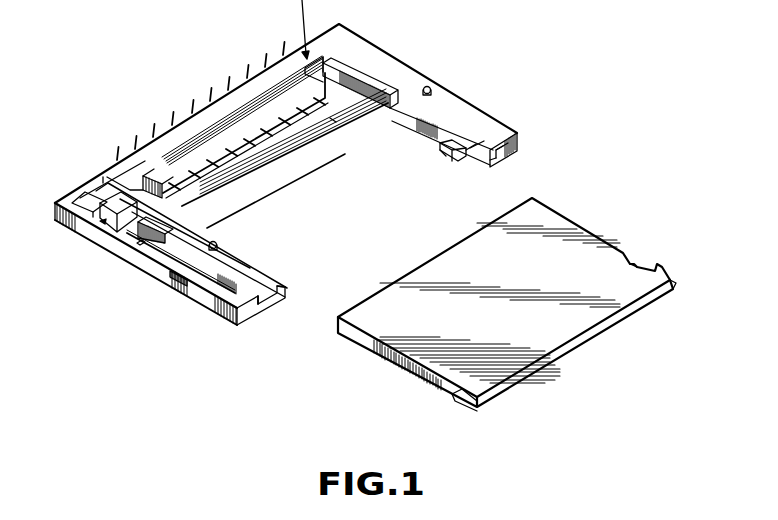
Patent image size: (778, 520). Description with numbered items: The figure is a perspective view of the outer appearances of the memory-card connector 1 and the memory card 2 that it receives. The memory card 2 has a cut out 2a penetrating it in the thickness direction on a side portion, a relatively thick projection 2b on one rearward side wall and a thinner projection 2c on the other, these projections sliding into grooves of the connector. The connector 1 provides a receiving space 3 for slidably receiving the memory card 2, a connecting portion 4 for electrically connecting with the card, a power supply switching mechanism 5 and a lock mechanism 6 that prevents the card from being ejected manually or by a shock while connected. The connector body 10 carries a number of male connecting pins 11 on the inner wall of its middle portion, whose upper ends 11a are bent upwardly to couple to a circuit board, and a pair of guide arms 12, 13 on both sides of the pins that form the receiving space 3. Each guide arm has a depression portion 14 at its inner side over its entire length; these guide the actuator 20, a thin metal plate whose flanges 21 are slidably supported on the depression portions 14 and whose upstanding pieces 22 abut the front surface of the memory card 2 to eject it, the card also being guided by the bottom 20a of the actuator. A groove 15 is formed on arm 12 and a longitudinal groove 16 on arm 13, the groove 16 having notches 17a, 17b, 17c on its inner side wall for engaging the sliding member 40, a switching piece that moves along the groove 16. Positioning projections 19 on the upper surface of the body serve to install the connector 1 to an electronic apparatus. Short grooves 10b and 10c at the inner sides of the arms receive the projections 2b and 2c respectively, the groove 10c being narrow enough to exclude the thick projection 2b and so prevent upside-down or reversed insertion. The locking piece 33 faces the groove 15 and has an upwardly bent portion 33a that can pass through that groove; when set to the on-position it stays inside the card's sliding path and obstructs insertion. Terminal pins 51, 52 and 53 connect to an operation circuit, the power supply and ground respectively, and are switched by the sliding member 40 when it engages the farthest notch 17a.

The connector 1 is at (121, 80).
The memory card 2 is at (584, 224).
The cut out 2a is at (643, 267).
The projection 2b is at (458, 404).
The projection 2c is at (676, 288).
The receiving space 3 is at (344, 208).
The connecting portion 4 is at (293, 94).
The power supply switching mechanism 5 is at (104, 178).
The lock mechanism 6 is at (454, 168).
The connector body 10 is at (190, 127).
The groove 10b is at (287, 286).
The groove 10c is at (488, 164).
The male connecting pins 11 is at (214, 167).
The upper ends 11a is at (213, 92).
The guide arm 12 is at (455, 100).
The guide arm 13 is at (211, 305).
The depression portion 14 is at (500, 152).
The groove 15 is at (461, 157).
The groove 16 is at (261, 303).
The notch 17a is at (103, 224).
The notch 17b is at (140, 245).
The notch 17c is at (200, 278).
The positioning projections 19 is at (427, 85).
The actuator 20 is at (300, 156).
The bottom 20a is at (350, 123).
The flanges 21 is at (367, 78).
The upstanding pieces 22 is at (128, 175).
The locking piece 33 is at (461, 143).
The bent portion 33a is at (436, 158).
The sliding member 40 is at (120, 220).
The terminal pin 51 is at (110, 187).
The terminal pin 52 is at (93, 205).
The terminal pin 53 is at (82, 195).